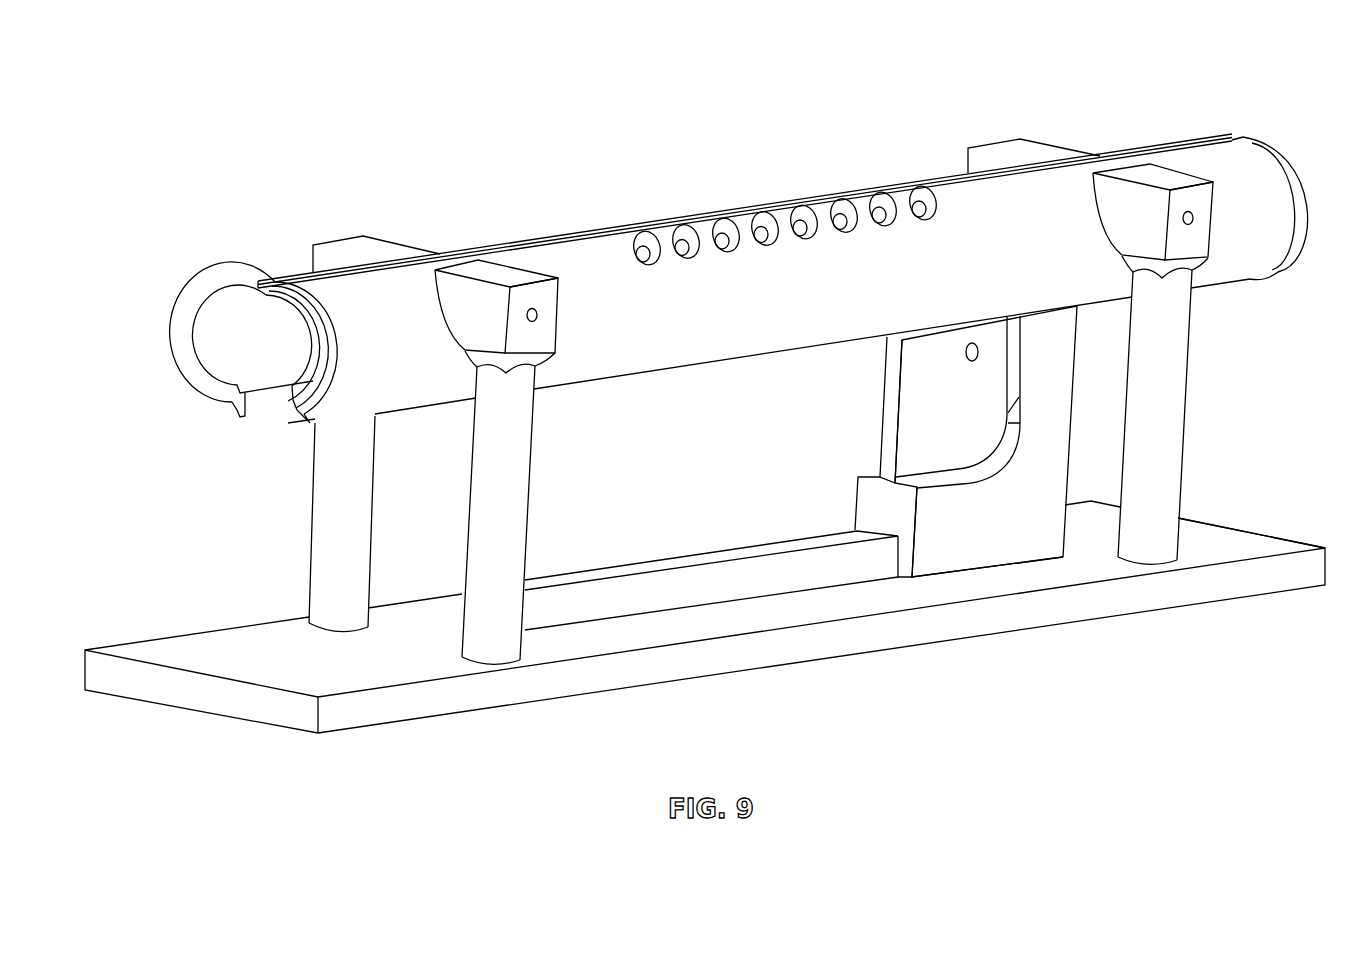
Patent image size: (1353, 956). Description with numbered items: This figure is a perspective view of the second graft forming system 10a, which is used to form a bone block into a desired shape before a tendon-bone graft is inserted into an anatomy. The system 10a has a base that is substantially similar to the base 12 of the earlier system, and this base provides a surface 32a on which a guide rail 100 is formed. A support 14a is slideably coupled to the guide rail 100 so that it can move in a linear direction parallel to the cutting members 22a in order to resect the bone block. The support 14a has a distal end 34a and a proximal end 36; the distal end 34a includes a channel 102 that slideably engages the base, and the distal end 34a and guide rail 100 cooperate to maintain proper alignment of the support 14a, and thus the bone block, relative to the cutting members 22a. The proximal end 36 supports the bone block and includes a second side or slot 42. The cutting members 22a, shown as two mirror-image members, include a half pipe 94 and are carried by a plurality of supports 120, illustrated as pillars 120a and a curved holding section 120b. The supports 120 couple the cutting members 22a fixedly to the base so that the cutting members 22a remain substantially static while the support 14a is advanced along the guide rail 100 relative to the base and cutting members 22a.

The second graft forming system 10a is at (176, 100).
The base 12 is at (1160, 619).
The support 14a is at (877, 440).
The cutting members 22a is at (728, 298).
The surface 32a is at (1260, 542).
The distal end 34a is at (957, 572).
The proximal end 36 is at (1017, 495).
The second side or slot 42 is at (944, 452).
The half pipe 94 is at (226, 404).
The guide rail 100 is at (718, 602).
The channel 102 is at (888, 568).
The support 120 is at (754, 431).
The pillars 120a is at (323, 578).
The curved holding section 120b is at (541, 290).